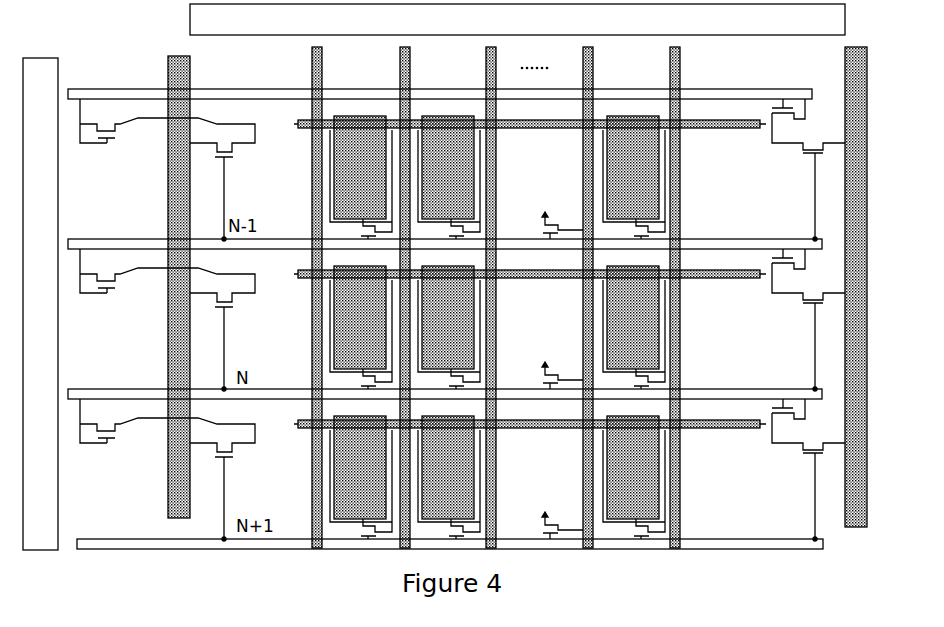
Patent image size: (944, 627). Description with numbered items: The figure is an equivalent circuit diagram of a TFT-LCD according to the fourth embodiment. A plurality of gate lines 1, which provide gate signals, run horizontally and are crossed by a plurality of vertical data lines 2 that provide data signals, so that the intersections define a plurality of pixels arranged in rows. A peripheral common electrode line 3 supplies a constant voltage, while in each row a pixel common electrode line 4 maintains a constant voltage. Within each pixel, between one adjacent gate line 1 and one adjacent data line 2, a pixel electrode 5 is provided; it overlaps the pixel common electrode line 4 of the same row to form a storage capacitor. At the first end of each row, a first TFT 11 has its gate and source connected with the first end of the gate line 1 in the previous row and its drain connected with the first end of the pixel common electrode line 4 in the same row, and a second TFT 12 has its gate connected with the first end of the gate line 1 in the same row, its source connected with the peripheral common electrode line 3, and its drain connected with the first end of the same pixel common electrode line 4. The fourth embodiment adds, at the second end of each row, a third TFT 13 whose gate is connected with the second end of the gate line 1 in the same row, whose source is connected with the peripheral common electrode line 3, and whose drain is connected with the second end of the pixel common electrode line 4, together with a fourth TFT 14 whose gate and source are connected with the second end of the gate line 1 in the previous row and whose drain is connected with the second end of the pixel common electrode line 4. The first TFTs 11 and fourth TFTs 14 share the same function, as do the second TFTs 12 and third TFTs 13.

The gate line 1 is at (165, 89).
The data line 2 is at (314, 80).
The peripheral common electrode line 3 is at (168, 56).
The pixel common electrode line 4 is at (687, 128).
The pixel electrode 5 is at (617, 205).
The first TFT 11 is at (107, 140).
The second TFT 12 is at (224, 159).
The third TFT 13 is at (815, 156).
The fourth TFT 14 is at (783, 114).